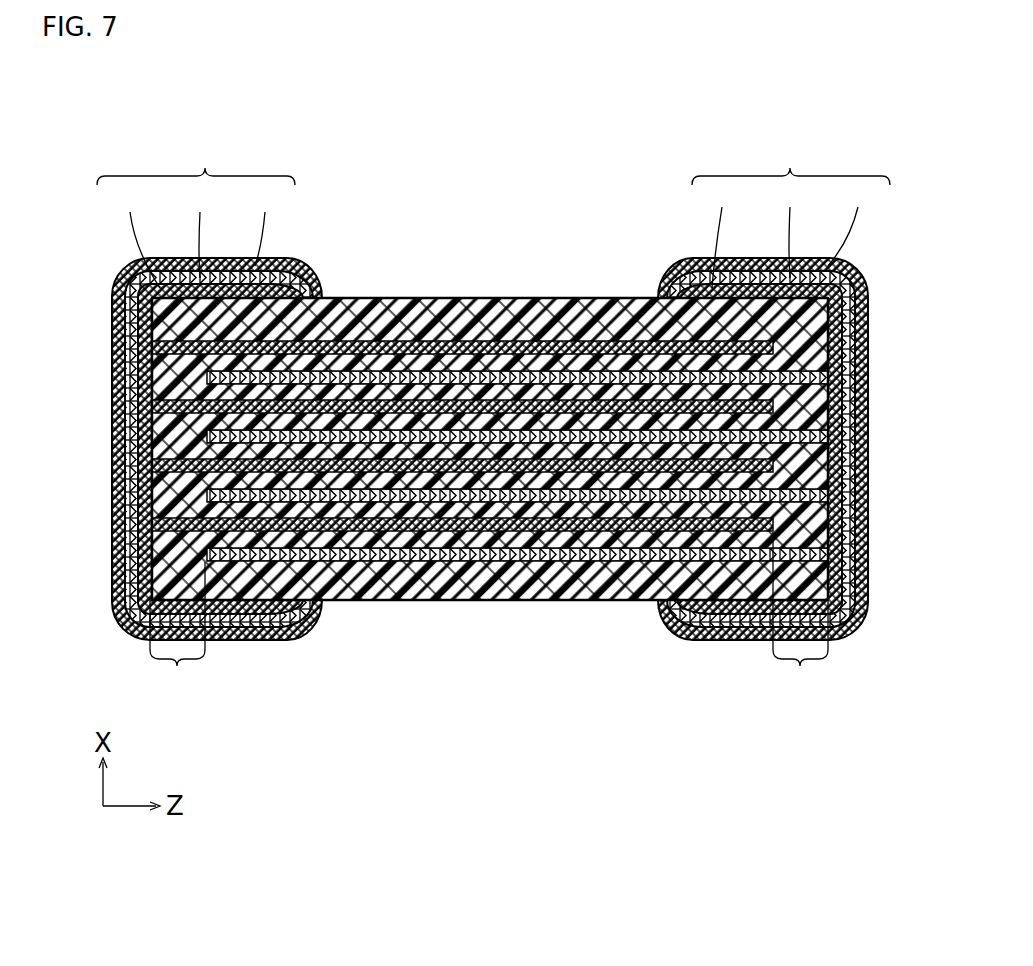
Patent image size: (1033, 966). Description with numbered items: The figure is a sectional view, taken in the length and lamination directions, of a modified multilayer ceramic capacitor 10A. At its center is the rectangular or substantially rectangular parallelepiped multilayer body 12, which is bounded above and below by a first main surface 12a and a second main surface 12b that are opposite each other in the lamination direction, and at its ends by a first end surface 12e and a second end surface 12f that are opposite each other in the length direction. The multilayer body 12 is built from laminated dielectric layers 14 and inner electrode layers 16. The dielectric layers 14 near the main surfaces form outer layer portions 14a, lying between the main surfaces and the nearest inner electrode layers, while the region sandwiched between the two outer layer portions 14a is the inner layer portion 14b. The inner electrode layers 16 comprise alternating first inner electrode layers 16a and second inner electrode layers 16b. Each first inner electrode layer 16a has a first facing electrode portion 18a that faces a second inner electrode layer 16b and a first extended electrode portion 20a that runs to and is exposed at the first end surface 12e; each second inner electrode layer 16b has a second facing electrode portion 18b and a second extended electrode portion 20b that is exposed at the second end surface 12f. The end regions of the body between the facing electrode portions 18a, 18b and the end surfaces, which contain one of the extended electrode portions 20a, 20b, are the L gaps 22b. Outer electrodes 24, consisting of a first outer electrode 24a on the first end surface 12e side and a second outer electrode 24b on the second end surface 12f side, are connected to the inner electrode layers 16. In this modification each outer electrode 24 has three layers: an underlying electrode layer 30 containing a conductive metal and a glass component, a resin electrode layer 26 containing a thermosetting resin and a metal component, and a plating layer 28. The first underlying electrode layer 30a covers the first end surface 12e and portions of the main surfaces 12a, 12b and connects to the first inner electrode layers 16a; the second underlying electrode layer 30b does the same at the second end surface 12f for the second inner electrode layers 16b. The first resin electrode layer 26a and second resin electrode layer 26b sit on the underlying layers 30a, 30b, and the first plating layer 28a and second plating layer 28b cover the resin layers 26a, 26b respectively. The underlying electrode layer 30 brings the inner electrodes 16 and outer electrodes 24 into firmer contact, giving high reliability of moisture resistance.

The multilayer ceramic capacitor 10A is at (95, 278).
The multilayer body 12 is at (488, 553).
The first main surface 12a is at (607, 299).
The second main surface 12b is at (630, 602).
The first end surface 12e is at (152, 440).
The second end surface 12f is at (828, 450).
The dielectric layers 14 is at (490, 432).
The outer layer portions 14a is at (527, 390).
The inner layer portion 14b is at (578, 417).
The inner electrode layers 16 is at (490, 574).
The first inner electrode layers 16a is at (332, 405).
The second inner electrode layers 16b is at (383, 433).
The first facing electrode portion 18a is at (412, 407).
The second facing electrode portion 18b is at (462, 435).
The first extended electrode portion 20a is at (170, 406).
The second extended electrode portion 20b is at (812, 436).
The L gaps 22b is at (489, 619).
The outer electrodes 24 is at (364, 857).
The first outer electrode 24a is at (209, 384).
The second outer electrode 24b is at (774, 381).
The resin electrode layer 26 is at (512, 857).
The first resin electrode layer 26a is at (295, 185).
The second resin electrode layer 26b is at (759, 395).
The plating layer 28 is at (662, 857).
The first plating layer 28a is at (200, 278).
The second plating layer 28b is at (790, 278).
The underlying electrode layer 30 is at (812, 857).
The first underlying electrode layer 30a is at (255, 266).
The second underlying electrode layer 30b is at (828, 266).